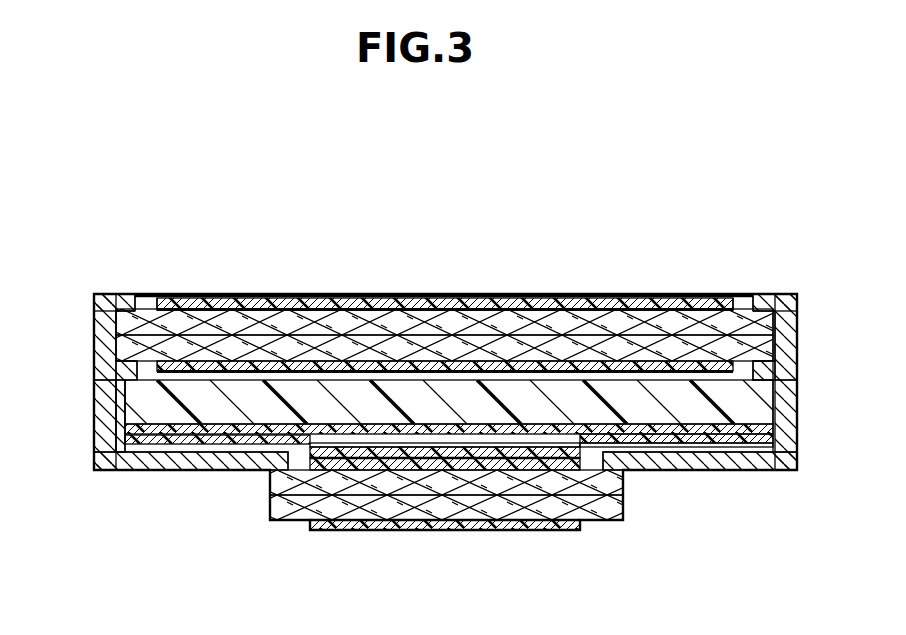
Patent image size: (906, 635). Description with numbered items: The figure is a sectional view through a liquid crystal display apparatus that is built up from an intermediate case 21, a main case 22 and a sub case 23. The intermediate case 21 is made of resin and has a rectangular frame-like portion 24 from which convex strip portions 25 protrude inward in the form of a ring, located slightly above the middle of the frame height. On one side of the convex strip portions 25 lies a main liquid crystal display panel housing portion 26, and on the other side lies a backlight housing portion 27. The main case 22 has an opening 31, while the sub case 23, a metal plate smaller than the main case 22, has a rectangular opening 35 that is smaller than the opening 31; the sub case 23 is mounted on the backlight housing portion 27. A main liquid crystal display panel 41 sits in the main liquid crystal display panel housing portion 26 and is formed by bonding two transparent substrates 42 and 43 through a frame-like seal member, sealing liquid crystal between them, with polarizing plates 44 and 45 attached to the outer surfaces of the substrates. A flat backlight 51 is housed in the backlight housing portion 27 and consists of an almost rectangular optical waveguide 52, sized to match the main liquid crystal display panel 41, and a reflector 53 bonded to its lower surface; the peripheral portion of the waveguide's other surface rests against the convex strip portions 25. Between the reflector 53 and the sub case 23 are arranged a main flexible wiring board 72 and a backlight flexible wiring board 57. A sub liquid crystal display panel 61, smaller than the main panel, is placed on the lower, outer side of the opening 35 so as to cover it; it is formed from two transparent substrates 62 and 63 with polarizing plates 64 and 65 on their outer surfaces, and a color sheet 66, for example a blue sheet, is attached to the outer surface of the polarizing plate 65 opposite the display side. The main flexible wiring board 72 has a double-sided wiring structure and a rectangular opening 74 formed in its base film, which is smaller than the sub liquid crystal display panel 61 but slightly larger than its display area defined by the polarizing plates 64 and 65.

The intermediate case 21 is at (94, 346).
The main case 22 is at (784, 294).
The sub case 23 is at (192, 472).
The frame-like portion 24 is at (105, 420).
The convex strip portion 25 is at (123, 378).
The main liquid crystal display panel housing portion 26 is at (772, 320).
The backlight housing portion 27 is at (760, 447).
The opening 31 is at (148, 294).
The opening 35 is at (446, 540).
The main liquid crystal display panel 41 is at (444, 302).
The transparent substrate 42 is at (287, 322).
The transparent substrate 43 is at (333, 345).
The polarizing plate 44 is at (392, 304).
The polarizing plate 45 is at (450, 365).
The backlight 51 is at (445, 326).
The optical waveguide 52 is at (579, 400).
The reflector 53 is at (645, 430).
The backlight flexible wiring board 57 is at (725, 444).
The sub liquid crystal display panel 61 is at (446, 528).
The transparent substrate 62 is at (355, 507).
The transparent substrate 63 is at (383, 487).
The polarizing plate 64 is at (423, 503).
The polarizing plate 65 is at (458, 471).
The color sheet 66 is at (497, 458).
The main flexible wiring board 72 is at (669, 443).
The opening 74 is at (547, 447).